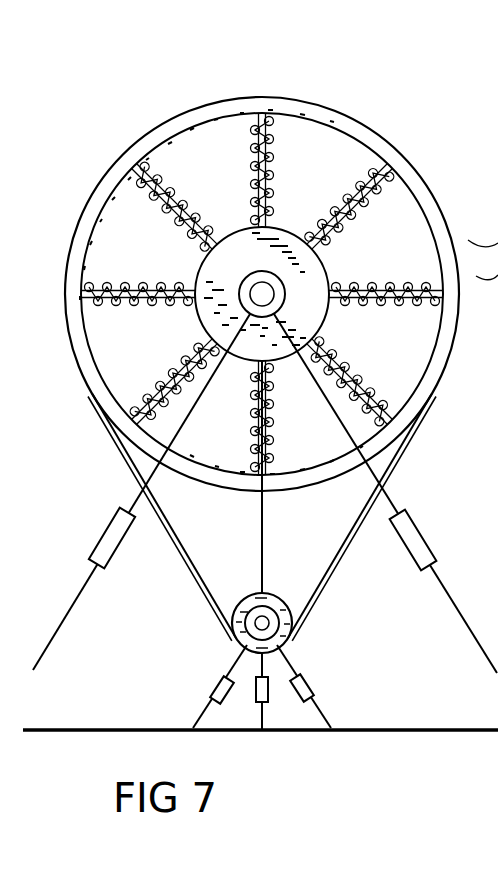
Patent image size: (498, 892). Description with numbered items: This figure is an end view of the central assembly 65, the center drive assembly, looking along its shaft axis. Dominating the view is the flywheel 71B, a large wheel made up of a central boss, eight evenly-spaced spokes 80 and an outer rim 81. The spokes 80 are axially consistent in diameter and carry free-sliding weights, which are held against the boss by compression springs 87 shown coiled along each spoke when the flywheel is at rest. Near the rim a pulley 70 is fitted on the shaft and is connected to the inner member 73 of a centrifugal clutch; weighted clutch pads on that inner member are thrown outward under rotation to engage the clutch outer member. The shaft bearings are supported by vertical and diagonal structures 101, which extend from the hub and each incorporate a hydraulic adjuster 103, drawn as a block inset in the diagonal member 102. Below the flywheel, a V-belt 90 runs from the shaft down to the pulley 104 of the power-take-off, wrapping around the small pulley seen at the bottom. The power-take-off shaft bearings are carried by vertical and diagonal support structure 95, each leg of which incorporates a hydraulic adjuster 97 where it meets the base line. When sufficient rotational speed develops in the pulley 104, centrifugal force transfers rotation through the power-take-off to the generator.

The central assembly 65 is at (98, 155).
The pulley 70 is at (479, 230).
The flywheel 71B is at (415, 172).
The inner member 73 is at (482, 264).
The spokes 80 is at (347, 200).
The outer rim 81 is at (368, 128).
The compression springs 87 is at (407, 284).
The V-belt 90 is at (385, 478).
The vertical and diagonal support structure 95 is at (233, 664).
The hydraulic adjusters 97 is at (213, 680).
The vertical and diagonal structures 101 is at (260, 539).
The guy line 102 is at (80, 598).
The hydraulic adjuster 103 is at (128, 536).
The pulley 104 is at (268, 592).